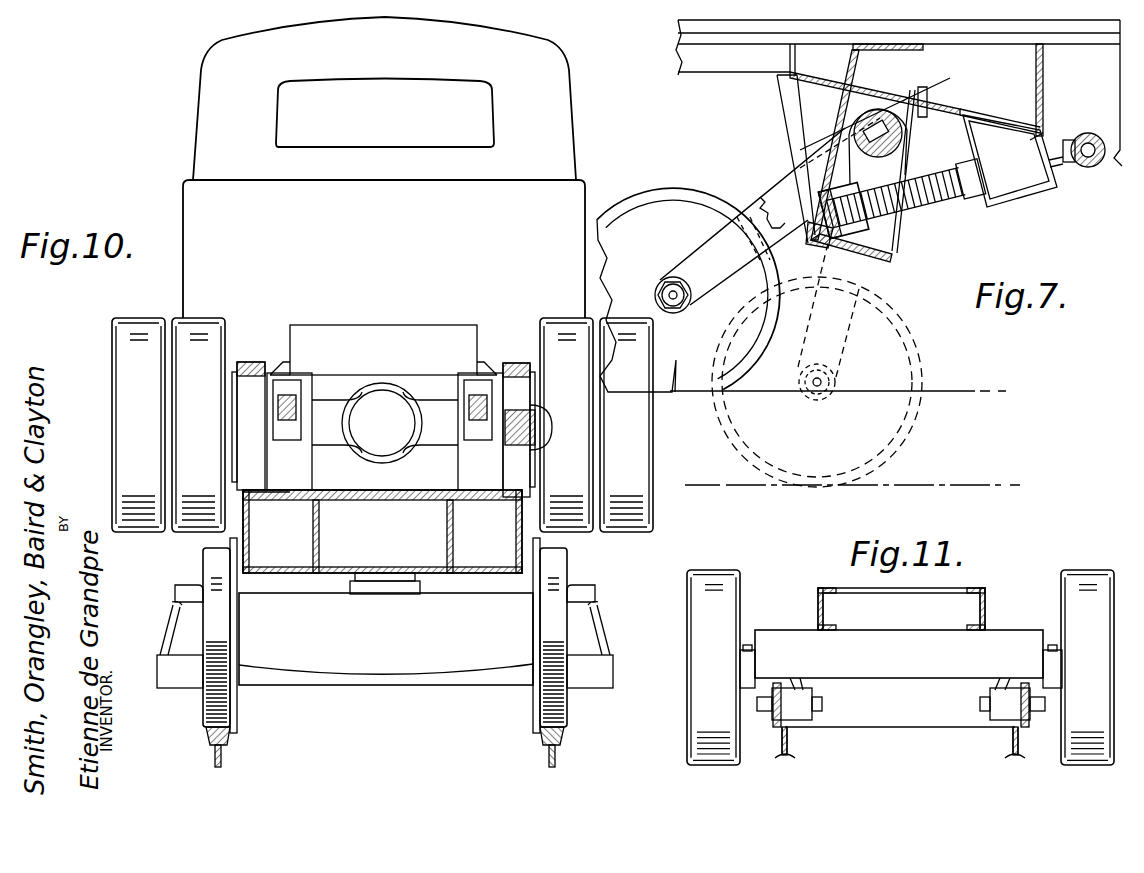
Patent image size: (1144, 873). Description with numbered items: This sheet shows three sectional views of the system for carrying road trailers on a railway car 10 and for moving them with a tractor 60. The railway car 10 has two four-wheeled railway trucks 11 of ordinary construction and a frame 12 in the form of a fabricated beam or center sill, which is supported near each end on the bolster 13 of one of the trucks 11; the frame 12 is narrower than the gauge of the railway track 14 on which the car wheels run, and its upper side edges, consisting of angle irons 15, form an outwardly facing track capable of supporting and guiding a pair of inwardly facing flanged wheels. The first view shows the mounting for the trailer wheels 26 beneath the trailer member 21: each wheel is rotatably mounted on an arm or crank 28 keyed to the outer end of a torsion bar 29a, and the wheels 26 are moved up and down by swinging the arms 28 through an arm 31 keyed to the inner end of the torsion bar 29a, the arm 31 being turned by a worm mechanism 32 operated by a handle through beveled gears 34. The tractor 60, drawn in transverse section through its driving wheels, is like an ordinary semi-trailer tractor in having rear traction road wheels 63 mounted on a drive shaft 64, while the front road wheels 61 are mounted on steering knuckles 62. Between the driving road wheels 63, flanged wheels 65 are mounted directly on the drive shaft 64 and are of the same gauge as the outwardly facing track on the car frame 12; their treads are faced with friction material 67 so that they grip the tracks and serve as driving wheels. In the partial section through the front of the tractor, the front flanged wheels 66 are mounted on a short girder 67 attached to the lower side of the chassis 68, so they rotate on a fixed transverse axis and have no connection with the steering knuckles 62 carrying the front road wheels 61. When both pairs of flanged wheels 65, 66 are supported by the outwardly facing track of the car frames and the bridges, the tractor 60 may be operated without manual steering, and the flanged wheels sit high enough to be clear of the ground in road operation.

In FIG. 10, the railway car 10 is at (349, 489).
In FIG. 10, the railway truck 11 is at (178, 680).
In FIG. 10, the frame 12 is at (390, 542).
In FIG. 10, the bolster 13 is at (400, 642).
In FIG. 10, the railway track 14 is at (224, 760).
In FIG. 10, the angle irons 15 is at (283, 495).
In FIG. 7, the angle irons 15 is at (873, 383).
In FIG. 7, the vehicle frame member 21 is at (1112, 152).
In FIG. 7, the wheels 26 is at (680, 198).
In FIG. 7, the arms or cranks 28 is at (762, 212).
In FIG. 7, the torsion bar 29a is at (918, 108).
In FIG. 7, the arm 31 is at (900, 172).
In FIG. 7, the worm mechanism 32 is at (950, 205).
In FIG. 7, the beveled gears 34 is at (1086, 128).
In FIG. 10, the tractor 60 is at (404, 222).
In FIG. 11, the front road wheels 61 is at (702, 645).
In FIG. 11, the steering knuckles 62 is at (757, 648).
In FIG. 10, the rear traction road wheels 63 is at (130, 423).
In FIG. 10, the drive shaft 64 is at (437, 425).
In FIG. 10, the flanged wheels 65 is at (246, 364).
In FIG. 11, the front flanged wheels 66 is at (798, 706).
In FIG. 10, the short girder 67 is at (262, 366).
In FIG. 11, the short girder 67 is at (925, 636).
In FIG. 11, the chassis 68 is at (987, 592).